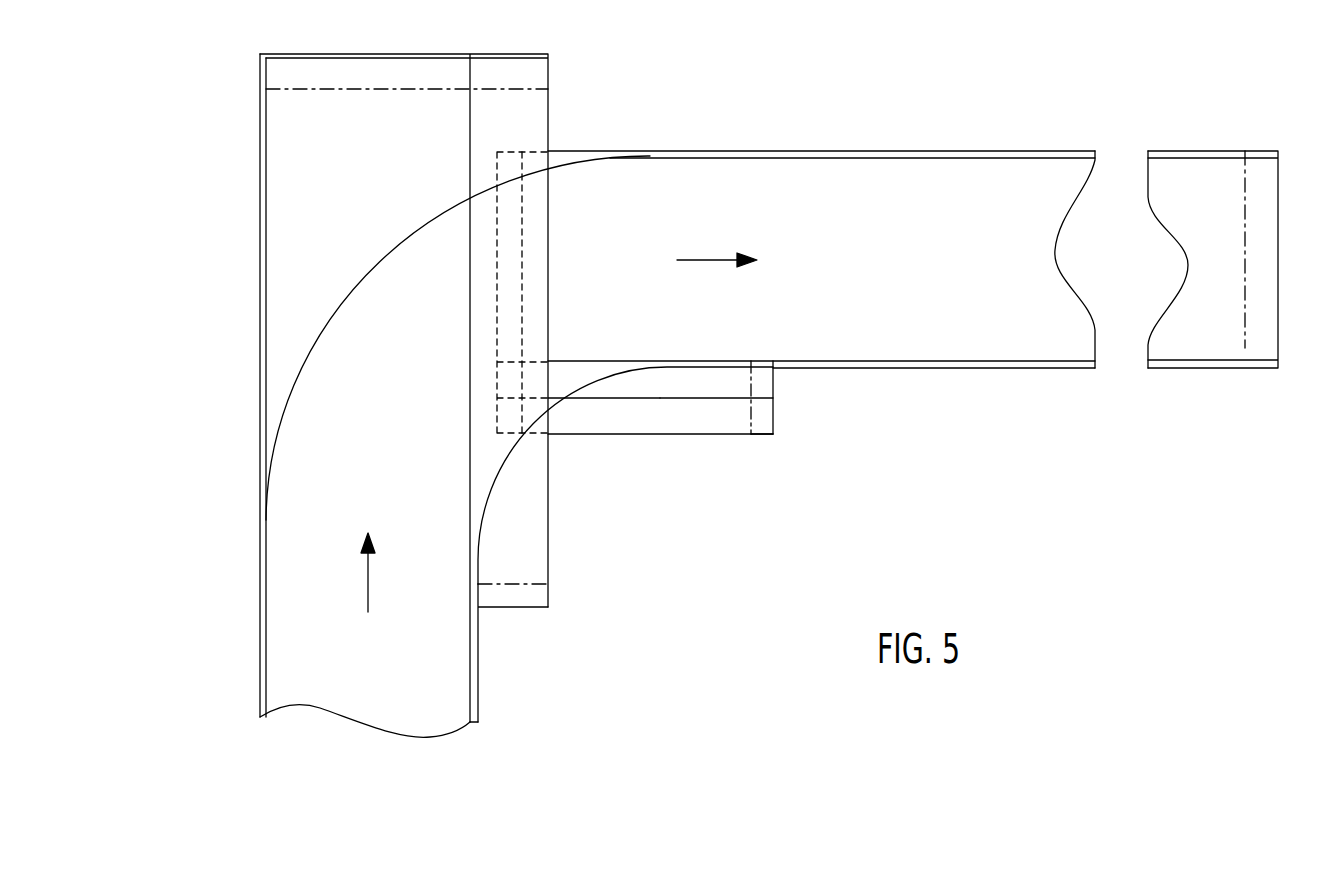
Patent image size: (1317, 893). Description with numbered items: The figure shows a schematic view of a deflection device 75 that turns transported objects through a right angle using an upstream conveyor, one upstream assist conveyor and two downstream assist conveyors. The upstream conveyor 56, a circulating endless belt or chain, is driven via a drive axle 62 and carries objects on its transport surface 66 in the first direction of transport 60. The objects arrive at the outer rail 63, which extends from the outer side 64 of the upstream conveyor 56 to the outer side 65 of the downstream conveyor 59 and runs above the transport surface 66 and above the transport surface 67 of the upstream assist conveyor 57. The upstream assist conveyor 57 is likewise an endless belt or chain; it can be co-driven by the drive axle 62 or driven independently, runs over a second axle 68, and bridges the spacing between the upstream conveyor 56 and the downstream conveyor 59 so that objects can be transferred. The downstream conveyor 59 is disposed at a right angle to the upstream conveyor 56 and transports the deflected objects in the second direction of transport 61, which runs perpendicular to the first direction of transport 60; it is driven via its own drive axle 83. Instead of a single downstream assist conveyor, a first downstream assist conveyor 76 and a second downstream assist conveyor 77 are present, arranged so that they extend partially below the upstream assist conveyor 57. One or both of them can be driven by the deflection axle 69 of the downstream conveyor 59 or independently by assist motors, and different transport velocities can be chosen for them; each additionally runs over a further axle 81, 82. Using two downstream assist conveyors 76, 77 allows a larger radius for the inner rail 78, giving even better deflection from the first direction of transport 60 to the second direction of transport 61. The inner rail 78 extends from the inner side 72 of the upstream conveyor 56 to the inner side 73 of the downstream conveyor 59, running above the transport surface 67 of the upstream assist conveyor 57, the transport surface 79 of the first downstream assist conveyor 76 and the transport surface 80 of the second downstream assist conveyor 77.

The upstream conveyor 56 is at (337, 720).
The upstream assist conveyor 57 is at (518, 608).
The downstream conveyor 59 is at (1082, 290).
The first direction of transport 60 is at (380, 572).
The second direction of transport 61 is at (717, 275).
The drive axle 62 is at (415, 88).
The outer rail 63 is at (320, 340).
The outer side of the upstream conveyor 64 is at (259, 604).
The outer side of the downstream conveyor 65 is at (765, 150).
The transport surface of the upstream conveyor 66 is at (290, 515).
The transport surface of the upstream assist conveyor 67 is at (535, 525).
The second axle 68 is at (520, 584).
The deflection axle 69 is at (522, 195).
The inner side of the upstream conveyor 72 is at (480, 690).
The inner side of the downstream conveyor 73 is at (975, 372).
The deflection device 75 is at (998, 70).
The first downstream assist conveyor 76 is at (774, 380).
The second downstream assist conveyor 77 is at (775, 412).
The inner rail 78 is at (507, 472).
The transport surface of the first downstream assist conveyor 79 is at (683, 388).
The transport surface of the second downstream assist conveyor 80 is at (643, 420).
The further axle 81 is at (745, 390).
The further axle 82 is at (757, 425).
The drive axle 83 is at (1245, 192).